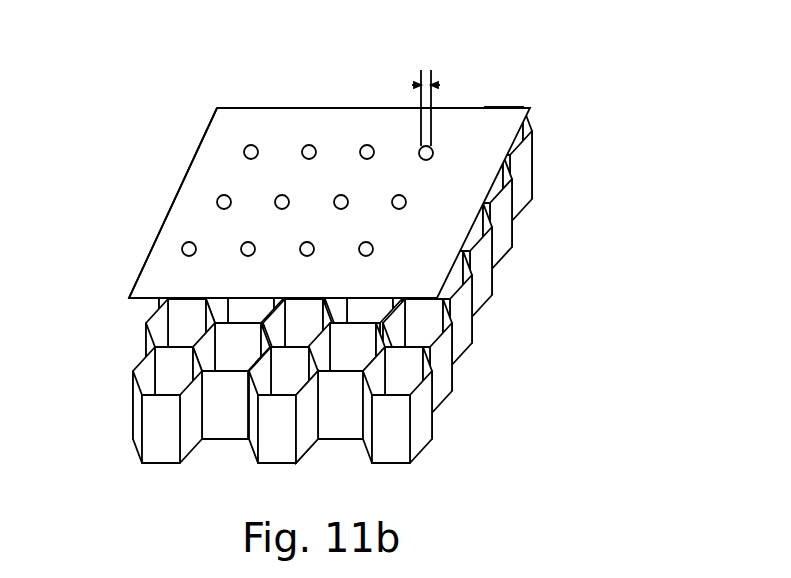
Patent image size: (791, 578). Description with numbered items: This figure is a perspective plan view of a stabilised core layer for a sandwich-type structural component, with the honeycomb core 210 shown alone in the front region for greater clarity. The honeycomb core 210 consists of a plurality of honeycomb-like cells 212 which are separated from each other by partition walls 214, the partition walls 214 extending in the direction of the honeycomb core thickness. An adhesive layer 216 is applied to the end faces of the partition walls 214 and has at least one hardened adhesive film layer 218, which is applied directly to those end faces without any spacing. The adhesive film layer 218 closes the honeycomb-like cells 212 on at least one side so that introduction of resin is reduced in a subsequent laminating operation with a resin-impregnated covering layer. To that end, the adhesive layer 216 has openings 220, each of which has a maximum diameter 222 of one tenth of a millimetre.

The honeycomb core 210 is at (356, 308).
The honeycomb-like cells 212 is at (262, 378).
The partition walls 214 is at (304, 444).
The adhesive layer 216 is at (216, 128).
The adhesive film layer 218 is at (171, 207).
The openings 220 is at (480, 136).
The maximum diameter 222 is at (436, 83).